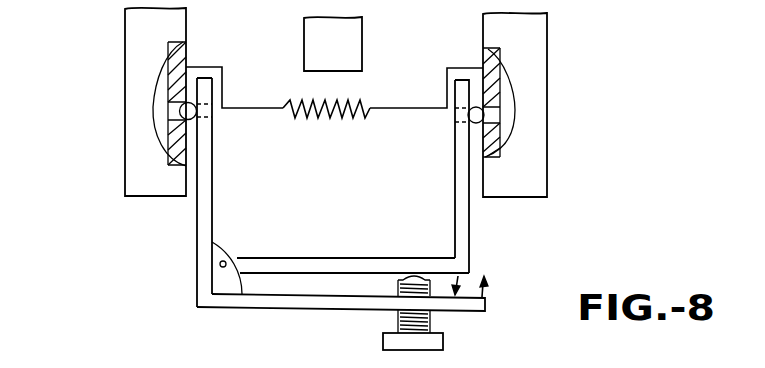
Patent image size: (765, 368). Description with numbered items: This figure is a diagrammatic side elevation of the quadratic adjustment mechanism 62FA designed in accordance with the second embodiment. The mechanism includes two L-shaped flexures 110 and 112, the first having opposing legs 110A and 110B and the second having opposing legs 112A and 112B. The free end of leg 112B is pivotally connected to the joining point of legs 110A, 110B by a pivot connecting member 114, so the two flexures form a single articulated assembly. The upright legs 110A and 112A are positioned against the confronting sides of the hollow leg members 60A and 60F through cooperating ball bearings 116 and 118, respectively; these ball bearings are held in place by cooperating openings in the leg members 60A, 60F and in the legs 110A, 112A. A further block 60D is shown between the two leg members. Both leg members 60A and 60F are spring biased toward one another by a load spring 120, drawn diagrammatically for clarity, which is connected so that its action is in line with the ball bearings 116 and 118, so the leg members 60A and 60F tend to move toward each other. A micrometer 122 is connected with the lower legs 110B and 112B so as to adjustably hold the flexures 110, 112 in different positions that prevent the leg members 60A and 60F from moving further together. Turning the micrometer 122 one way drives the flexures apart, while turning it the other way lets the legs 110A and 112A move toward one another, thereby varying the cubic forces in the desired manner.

The leg member 60A is at (133, 33).
The center block 60D is at (353, 33).
The leg member 60F is at (540, 35).
The L-shaped flexure 110 is at (299, 214).
The leg 110A is at (202, 262).
The leg 110B is at (283, 307).
The L-shaped flexure 112 is at (388, 176).
The leg 112A is at (462, 221).
The leg 112B is at (370, 262).
The pivot connecting member 114 is at (217, 253).
The ball bearing 116 is at (198, 113).
The ball bearing 118 is at (470, 117).
The load spring 120 is at (305, 107).
The micrometer 122 is at (440, 339).
The adjustment mechanism 62FA is at (194, 317).